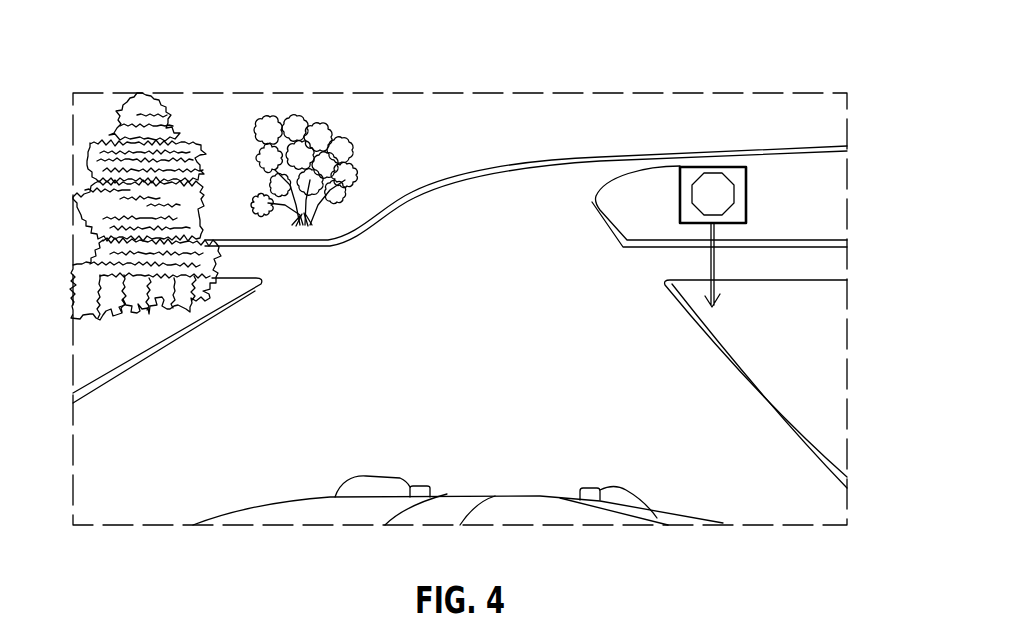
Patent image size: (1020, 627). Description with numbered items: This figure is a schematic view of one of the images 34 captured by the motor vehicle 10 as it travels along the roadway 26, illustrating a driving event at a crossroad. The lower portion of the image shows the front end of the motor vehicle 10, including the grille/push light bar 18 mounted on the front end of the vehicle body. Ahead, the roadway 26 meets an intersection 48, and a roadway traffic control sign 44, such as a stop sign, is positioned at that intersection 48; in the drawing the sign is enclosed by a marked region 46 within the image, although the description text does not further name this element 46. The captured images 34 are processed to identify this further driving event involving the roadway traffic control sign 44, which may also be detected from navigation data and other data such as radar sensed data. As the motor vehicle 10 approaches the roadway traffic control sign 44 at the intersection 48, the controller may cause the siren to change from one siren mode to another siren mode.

The motor vehicle 10 is at (277, 486).
The grille/push light bar 18 is at (335, 496).
The roadway 26 is at (650, 403).
The images 34 is at (750, 92).
The roadway traffic control sign 44 is at (697, 177).
The detection bounding box 46 is at (680, 195).
The intersection 48 is at (262, 257).